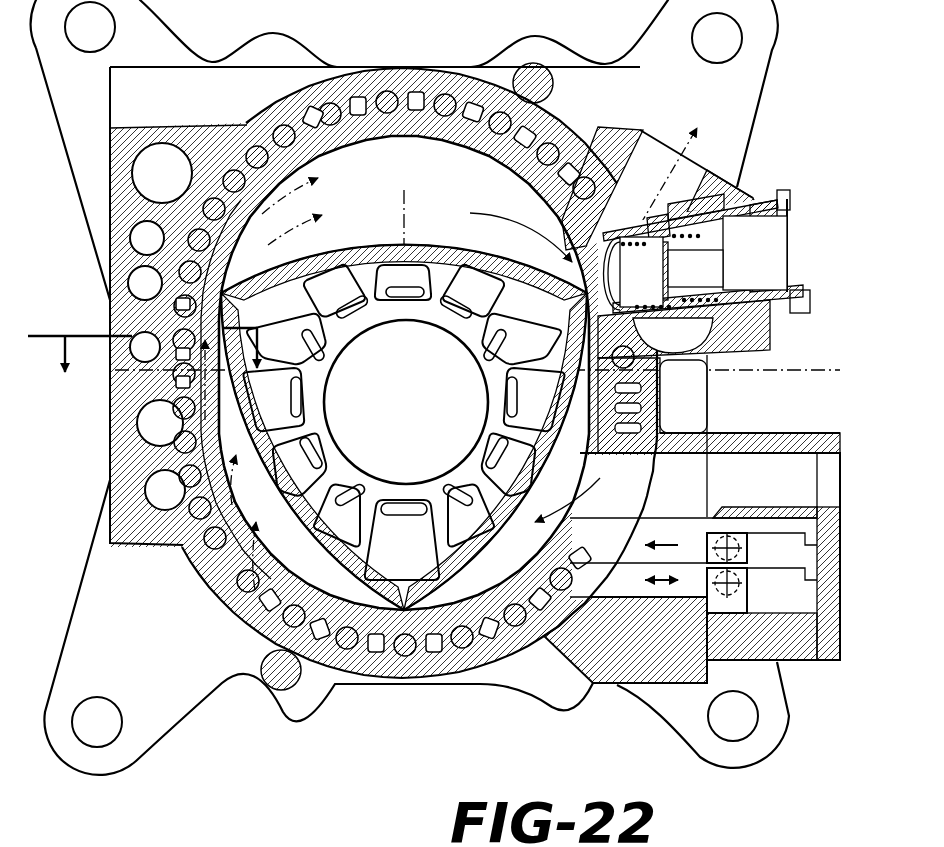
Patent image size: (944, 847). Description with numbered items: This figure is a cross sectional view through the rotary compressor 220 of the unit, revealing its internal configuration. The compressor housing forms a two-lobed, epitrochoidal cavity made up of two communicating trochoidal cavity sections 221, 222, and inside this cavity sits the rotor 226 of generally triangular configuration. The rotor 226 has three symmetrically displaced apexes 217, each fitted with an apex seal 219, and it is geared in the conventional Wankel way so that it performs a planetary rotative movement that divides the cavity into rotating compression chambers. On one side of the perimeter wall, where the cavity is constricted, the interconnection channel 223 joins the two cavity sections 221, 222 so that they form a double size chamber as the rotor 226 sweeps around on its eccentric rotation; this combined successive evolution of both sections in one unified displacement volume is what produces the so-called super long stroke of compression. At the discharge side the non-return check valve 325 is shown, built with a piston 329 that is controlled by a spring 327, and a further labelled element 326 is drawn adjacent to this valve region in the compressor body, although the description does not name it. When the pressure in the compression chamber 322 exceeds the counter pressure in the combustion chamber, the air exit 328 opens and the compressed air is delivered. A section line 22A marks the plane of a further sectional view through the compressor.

The rotary compressor 220 is at (471, 66).
The trochoidal cavity section 222 is at (376, 174).
The compression chamber 322 is at (477, 387).
The piston 329 is at (521, 232).
The apex 217 is at (302, 258).
The apex seal 219 is at (235, 256).
The interconnection channel 223 is at (185, 405).
The trochoidal cavity section 221 is at (286, 625).
The rotor 226 is at (535, 518).
The spring 327 is at (705, 300).
The air exit 328 is at (695, 178).
The non-return check valve 325 is at (736, 276).
The port passage 326 is at (752, 470).
The section line 22A is at (169, 339).